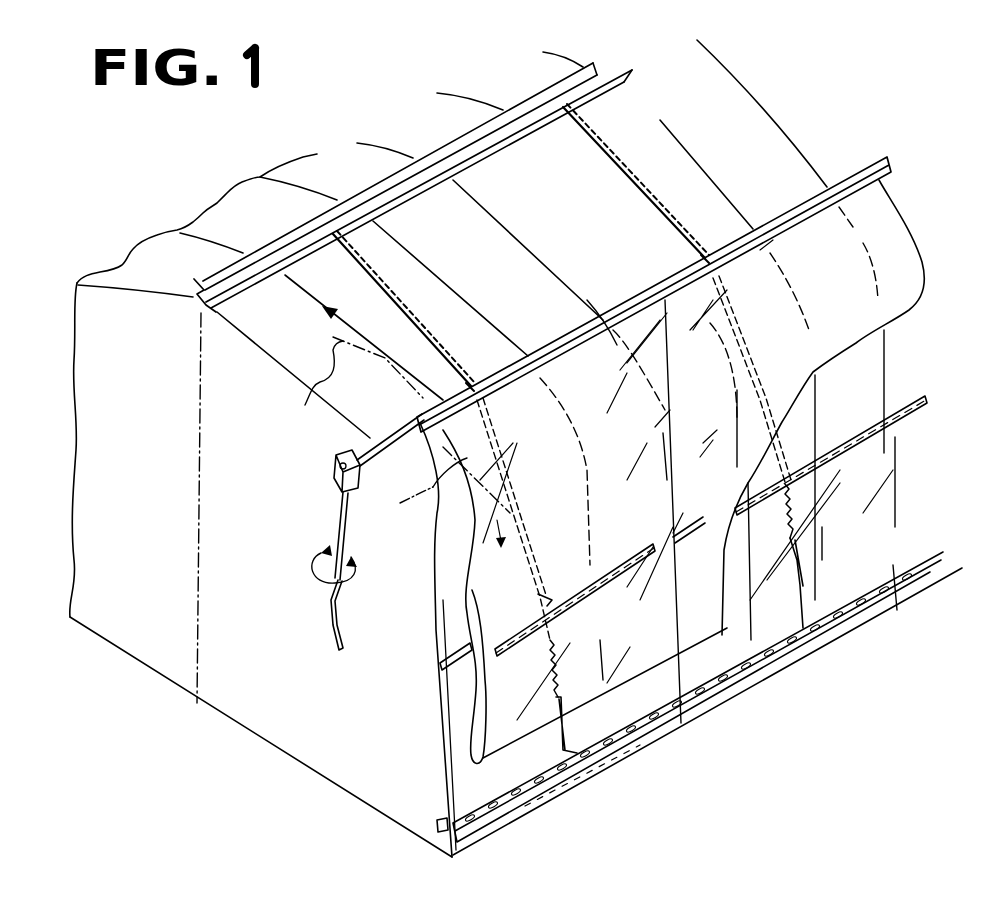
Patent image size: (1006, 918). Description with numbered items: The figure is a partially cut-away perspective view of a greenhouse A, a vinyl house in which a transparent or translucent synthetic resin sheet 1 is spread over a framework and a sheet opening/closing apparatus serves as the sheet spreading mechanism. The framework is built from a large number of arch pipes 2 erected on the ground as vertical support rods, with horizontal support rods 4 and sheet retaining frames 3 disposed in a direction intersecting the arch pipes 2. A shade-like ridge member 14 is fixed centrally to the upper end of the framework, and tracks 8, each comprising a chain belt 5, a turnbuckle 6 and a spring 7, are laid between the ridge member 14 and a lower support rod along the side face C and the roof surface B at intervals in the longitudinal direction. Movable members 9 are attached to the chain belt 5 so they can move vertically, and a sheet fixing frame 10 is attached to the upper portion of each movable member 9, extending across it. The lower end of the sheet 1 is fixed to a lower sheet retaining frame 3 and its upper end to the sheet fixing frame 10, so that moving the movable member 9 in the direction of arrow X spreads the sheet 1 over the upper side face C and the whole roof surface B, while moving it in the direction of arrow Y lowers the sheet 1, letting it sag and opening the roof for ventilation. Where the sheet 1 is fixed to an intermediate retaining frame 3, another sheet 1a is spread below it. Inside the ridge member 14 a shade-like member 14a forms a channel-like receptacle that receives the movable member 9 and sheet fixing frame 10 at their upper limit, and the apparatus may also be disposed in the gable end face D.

The synthetic resin sheet 1 is at (906, 262).
The another sheet 1a is at (452, 763).
The arch pipe 2 is at (432, 598).
The sheet retaining frame 3 is at (440, 673).
The horizontal support rod 4 is at (442, 830).
The chain belt 5 is at (418, 322).
The turnbuckle 6 is at (567, 723).
The spring 7 is at (566, 660).
The track 8 is at (396, 293).
The movable member 9 is at (472, 383).
The sheet fixing frame 10 is at (615, 308).
The ridge member 14 is at (215, 314).
The shade-like member 14a is at (205, 301).
The greenhouse A is at (821, 158).
The roof surface B is at (298, 333).
The side face C is at (463, 546).
The gable end face D is at (254, 520).
The arrow X is at (356, 386).
The arrow Y is at (414, 532).